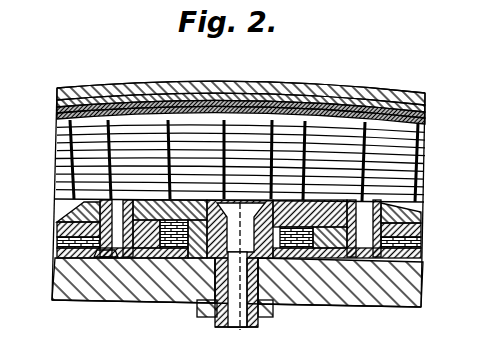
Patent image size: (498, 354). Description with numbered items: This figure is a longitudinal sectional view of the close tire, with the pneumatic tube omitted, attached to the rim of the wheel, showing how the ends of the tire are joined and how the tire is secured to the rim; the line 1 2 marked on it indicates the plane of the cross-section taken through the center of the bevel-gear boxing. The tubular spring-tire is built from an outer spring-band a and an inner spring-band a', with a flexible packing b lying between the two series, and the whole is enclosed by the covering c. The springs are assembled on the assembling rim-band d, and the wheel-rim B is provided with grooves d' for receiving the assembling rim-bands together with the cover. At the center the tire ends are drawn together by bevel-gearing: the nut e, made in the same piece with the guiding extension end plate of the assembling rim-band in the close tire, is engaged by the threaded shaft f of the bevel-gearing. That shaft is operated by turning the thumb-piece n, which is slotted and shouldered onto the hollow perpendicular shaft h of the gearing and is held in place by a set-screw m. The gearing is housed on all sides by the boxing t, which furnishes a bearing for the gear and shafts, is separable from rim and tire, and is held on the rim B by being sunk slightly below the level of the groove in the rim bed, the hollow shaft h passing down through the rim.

The section line end 1 is at (241, 80).
The section line end 2 is at (240, 332).
The outer spring-band a is at (241, 181).
The inner spring-band a' is at (247, 122).
The flexible packing b is at (57, 110).
The covering c is at (57, 90).
The assembling rim-band d is at (239, 229).
The groove in rim d' is at (241, 235).
The wheel-rim B is at (52, 291).
The nut e is at (178, 263).
The thumb-piece n is at (203, 308).
The set-screw m is at (213, 325).
The hollow perpendicular shaft h is at (257, 296).
The boxing t is at (287, 270).
The threaded shaft f is at (160, 272).